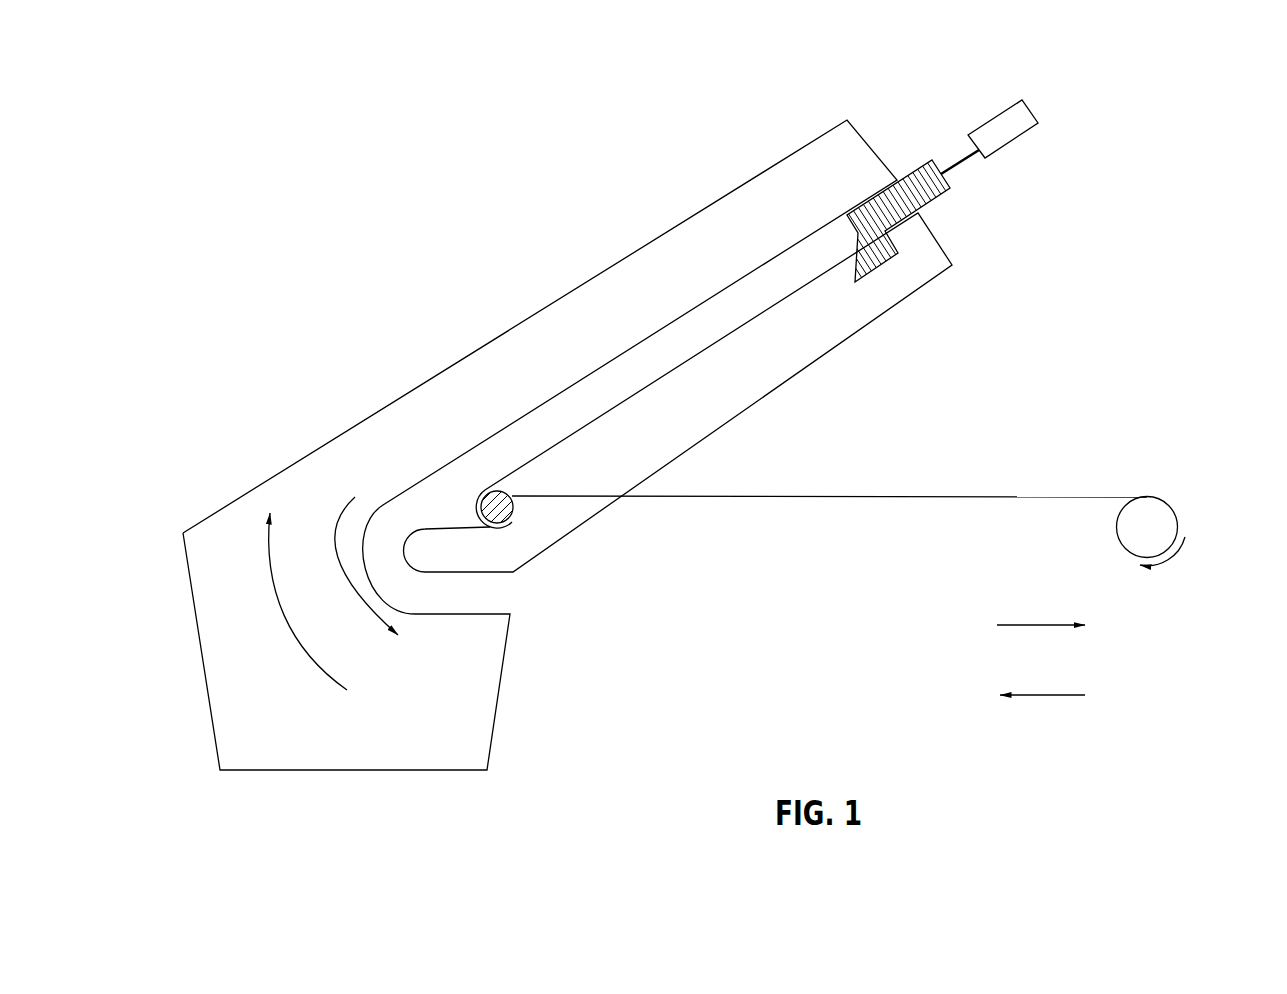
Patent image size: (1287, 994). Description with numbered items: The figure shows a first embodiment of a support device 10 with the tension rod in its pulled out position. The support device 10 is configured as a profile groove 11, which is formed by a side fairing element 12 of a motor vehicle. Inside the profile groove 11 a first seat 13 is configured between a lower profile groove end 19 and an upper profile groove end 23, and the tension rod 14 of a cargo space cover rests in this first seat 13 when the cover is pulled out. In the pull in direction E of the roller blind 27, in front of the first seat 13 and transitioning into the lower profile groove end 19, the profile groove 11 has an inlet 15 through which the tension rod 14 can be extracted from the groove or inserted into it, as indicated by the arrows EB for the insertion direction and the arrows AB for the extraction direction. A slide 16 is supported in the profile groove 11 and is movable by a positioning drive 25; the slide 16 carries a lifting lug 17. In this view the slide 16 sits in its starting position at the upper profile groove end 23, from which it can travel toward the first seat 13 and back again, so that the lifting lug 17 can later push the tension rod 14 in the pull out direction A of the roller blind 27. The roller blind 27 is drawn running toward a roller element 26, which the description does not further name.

The support device 10 is at (495, 227).
The profile groove 11 is at (632, 386).
The side fairing element 12 is at (767, 428).
The first seat 13 is at (505, 535).
The tension rod 14 is at (514, 523).
The inlet 15 is at (498, 600).
The slide 16 is at (940, 168).
The lifting lug 17 is at (869, 283).
The lower profile groove end 19 is at (375, 500).
The upper profile groove end 23 is at (942, 210).
The positioning drive 25 is at (1027, 148).
The transport roller 26 is at (1162, 490).
The roller blind 27 is at (997, 492).
The insertion direction EB is at (289, 601).
The extraction direction AB is at (350, 566).
The pull in direction E is at (1041, 609).
The pull out direction A is at (1042, 678).